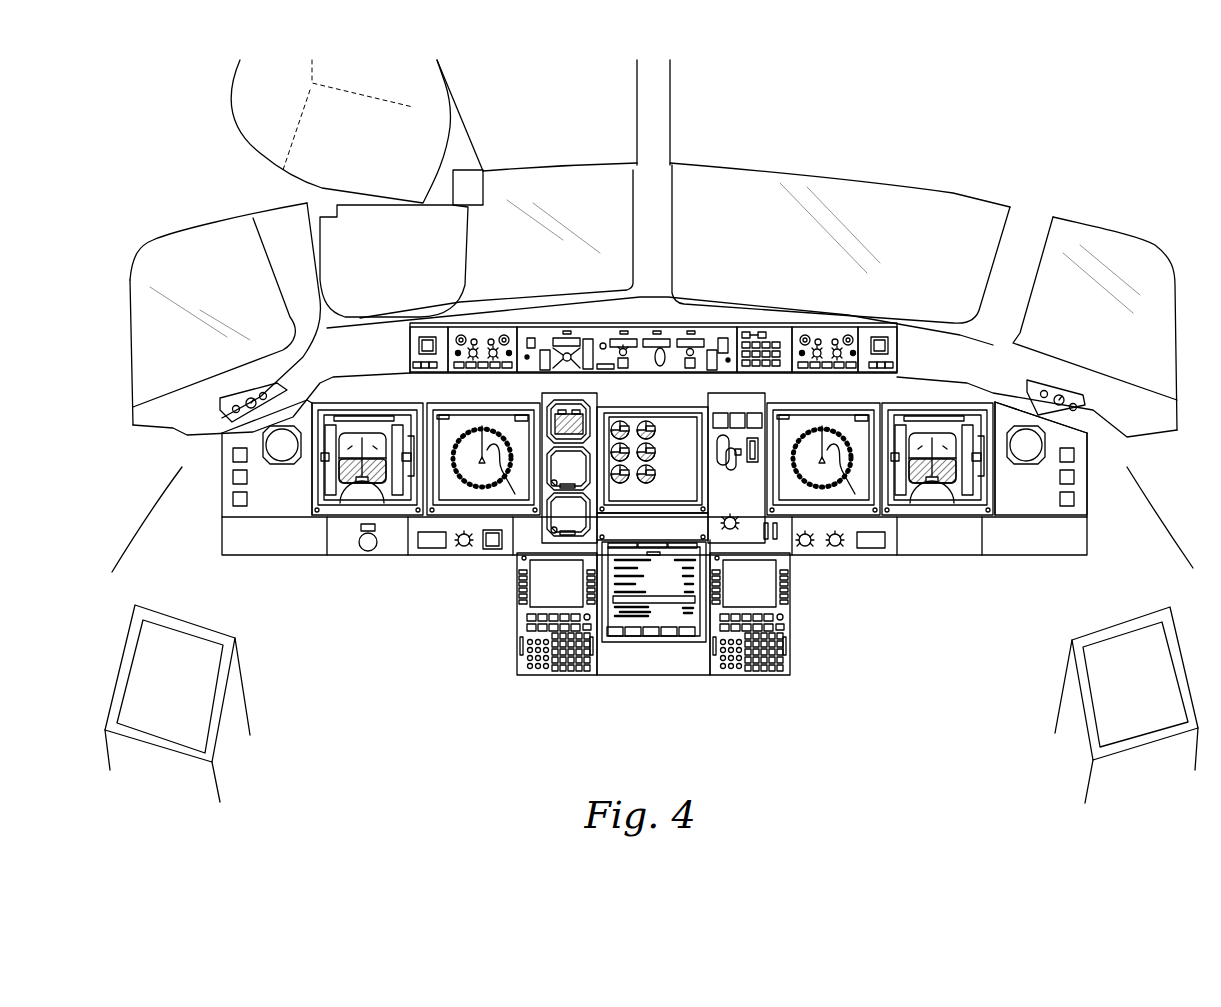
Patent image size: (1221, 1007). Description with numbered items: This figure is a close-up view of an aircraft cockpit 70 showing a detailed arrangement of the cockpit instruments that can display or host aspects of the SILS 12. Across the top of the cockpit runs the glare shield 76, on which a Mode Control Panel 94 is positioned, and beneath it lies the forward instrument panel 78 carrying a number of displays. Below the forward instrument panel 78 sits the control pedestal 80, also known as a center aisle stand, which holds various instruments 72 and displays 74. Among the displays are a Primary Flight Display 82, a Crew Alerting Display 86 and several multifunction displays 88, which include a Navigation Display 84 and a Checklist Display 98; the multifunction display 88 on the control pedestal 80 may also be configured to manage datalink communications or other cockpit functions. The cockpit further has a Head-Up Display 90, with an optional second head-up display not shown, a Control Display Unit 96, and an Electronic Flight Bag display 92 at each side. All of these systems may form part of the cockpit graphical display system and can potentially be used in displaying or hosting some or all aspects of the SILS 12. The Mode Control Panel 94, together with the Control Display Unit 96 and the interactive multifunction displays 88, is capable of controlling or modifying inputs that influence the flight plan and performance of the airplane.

The SILS 12 is at (680, 522).
The aircraft cockpit 70 is at (1100, 198).
The instruments 72 is at (945, 588).
The displays 74 is at (403, 584).
The glare shield 76 is at (967, 345).
The forward instrument panel 78 is at (1080, 478).
The control pedestal 80 is at (810, 672).
The Primary Flight Display 82 is at (331, 503).
The Navigation Display 84 is at (467, 453).
The Crew Alerting Display 86 is at (673, 423).
The multifunction display 88 is at (488, 410).
The Head-Up Display 90 is at (353, 258).
The Electronic Flight Bag display 92 is at (202, 670).
The Mode Control Panel 94 is at (540, 332).
The Control Display Unit 96 is at (517, 580).
The Checklist Display 98 is at (613, 615).